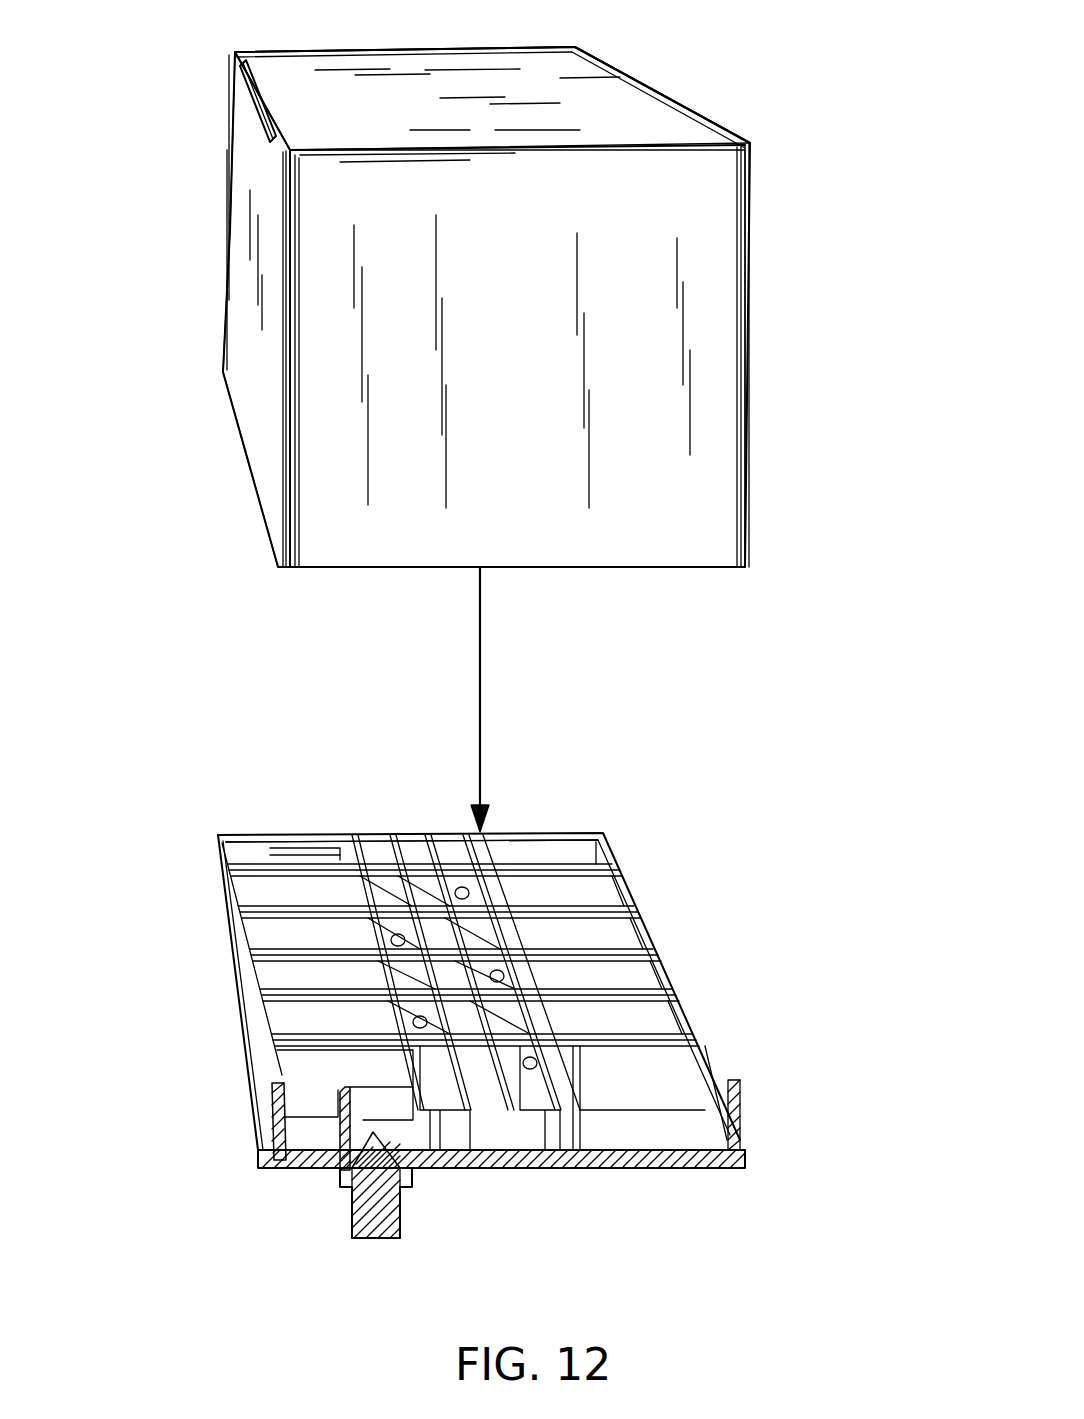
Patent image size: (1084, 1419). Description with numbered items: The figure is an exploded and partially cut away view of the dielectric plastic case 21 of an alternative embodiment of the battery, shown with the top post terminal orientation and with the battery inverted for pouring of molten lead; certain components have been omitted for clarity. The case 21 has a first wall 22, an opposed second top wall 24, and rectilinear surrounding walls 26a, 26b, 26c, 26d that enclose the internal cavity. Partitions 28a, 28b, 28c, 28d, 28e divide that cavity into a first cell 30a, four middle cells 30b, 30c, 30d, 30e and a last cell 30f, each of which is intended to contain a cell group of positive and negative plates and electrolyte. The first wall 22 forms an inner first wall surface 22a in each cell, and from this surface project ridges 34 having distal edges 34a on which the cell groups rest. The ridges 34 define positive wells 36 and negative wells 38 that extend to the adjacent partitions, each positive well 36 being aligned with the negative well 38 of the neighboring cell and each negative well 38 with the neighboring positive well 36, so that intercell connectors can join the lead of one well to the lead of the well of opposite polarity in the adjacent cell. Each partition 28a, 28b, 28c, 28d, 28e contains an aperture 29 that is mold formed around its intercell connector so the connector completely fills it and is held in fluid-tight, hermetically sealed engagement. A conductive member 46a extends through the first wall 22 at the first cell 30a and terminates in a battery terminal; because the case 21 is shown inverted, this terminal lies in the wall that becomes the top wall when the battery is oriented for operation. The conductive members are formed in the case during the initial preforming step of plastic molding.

The dielectric plastic case 21 is at (382, 490).
The first wall 22 is at (675, 1142).
The inner first wall surface 22a is at (688, 1162).
The second top wall 24 is at (570, 88).
The surrounding wall 26a is at (262, 303).
The surrounding wall 26b is at (752, 268).
The surrounding wall 26c is at (262, 48).
The surrounding wall 26d is at (645, 360).
The partition 28a is at (695, 1040).
The partition 28b is at (675, 995).
The partition 28c is at (656, 955).
The partition 28d is at (636, 912).
The partition 28e is at (603, 868).
The aperture 29 is at (575, 1085).
The first cell 30a is at (680, 1075).
The middle cell 30b is at (668, 1012).
The middle cell 30c is at (647, 968).
The middle cell 30d is at (623, 930).
The middle cell 30e is at (605, 897).
The last cell 30f is at (585, 852).
The projecting ridges 34 is at (400, 1112).
The distal edges 34a is at (575, 1085).
The positive wells 36 is at (440, 1107).
The negative wells 38 is at (548, 1105).
The conductive member 46a is at (368, 1240).